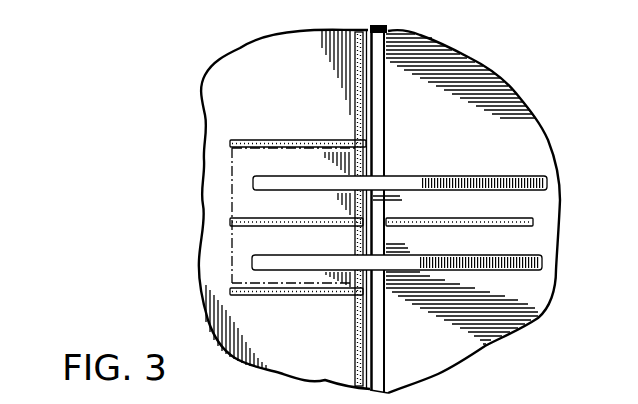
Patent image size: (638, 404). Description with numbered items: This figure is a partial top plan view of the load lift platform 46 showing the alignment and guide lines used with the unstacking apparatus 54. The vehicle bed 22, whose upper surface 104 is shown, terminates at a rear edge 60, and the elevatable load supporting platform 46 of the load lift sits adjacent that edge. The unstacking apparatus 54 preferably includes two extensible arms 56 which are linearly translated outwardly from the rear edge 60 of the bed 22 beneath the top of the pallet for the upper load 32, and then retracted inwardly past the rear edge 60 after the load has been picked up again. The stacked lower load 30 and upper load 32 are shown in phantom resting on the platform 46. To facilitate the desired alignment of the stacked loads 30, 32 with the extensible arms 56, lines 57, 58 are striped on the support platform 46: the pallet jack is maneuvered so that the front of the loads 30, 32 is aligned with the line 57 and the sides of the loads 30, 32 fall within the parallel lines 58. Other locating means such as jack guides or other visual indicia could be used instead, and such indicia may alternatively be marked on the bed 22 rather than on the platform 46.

The bed 22 is at (538, 130).
The lower load 30 is at (231, 198).
The upper load 32 is at (246, 215).
The load supporting platform 46 is at (292, 81).
The unstacking apparatus 54 is at (549, 181).
The extensible arms 56 is at (388, 177).
The line 57 is at (355, 367).
The parallel lines 58 is at (271, 139).
The rear edge 60 is at (372, 110).
The upper surface 104 is at (424, 366).